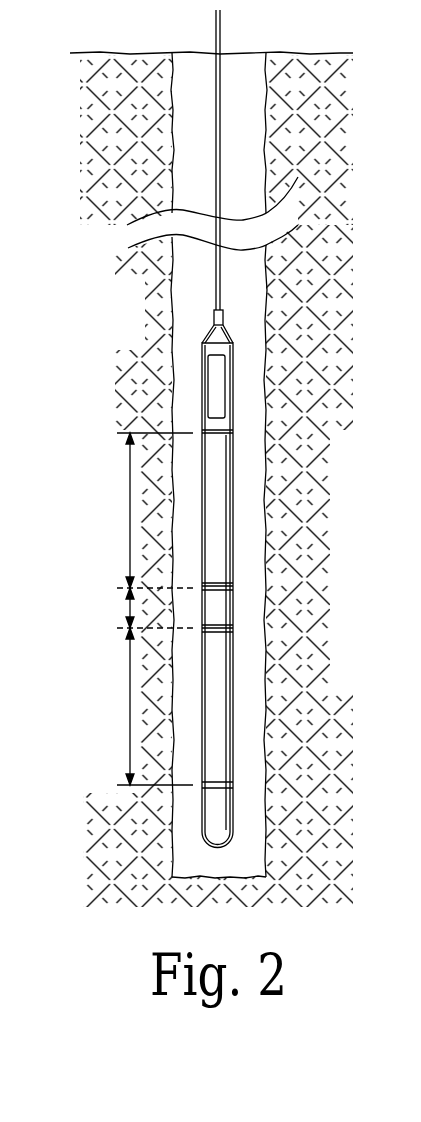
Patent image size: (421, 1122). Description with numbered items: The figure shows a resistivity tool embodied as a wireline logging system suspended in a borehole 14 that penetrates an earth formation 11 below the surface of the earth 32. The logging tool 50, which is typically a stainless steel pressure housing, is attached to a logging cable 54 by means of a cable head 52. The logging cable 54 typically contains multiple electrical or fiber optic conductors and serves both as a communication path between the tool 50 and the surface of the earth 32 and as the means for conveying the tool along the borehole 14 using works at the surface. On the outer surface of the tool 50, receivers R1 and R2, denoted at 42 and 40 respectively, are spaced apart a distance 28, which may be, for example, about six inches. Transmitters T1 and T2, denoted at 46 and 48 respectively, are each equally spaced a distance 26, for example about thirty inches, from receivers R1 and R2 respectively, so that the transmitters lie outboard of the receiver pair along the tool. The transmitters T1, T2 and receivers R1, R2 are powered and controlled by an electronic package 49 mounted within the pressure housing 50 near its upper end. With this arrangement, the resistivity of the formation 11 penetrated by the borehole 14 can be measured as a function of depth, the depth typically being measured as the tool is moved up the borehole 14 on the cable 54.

The formation 11 is at (327, 287).
The borehole 14 is at (190, 275).
The surface of the earth 32 is at (280, 53).
The logging cable 54 is at (221, 151).
The cable head 52 is at (208, 315).
The logging tool 50 is at (227, 502).
The electronic package 49 is at (233, 366).
The transmitter T1 46 is at (235, 427).
The receiver R1 42 is at (232, 576).
The receiver R2 40 is at (223, 633).
The transmitter T2 48 is at (235, 790).
The transmitter-to-receiver spacing 26 is at (130, 510).
The receiver spacing 28 is at (130, 608).
The transmitter T1 is at (210, 435).
The receiver R1 is at (209, 587).
The receiver R2 is at (209, 629).
The transmitter T2 is at (211, 787).